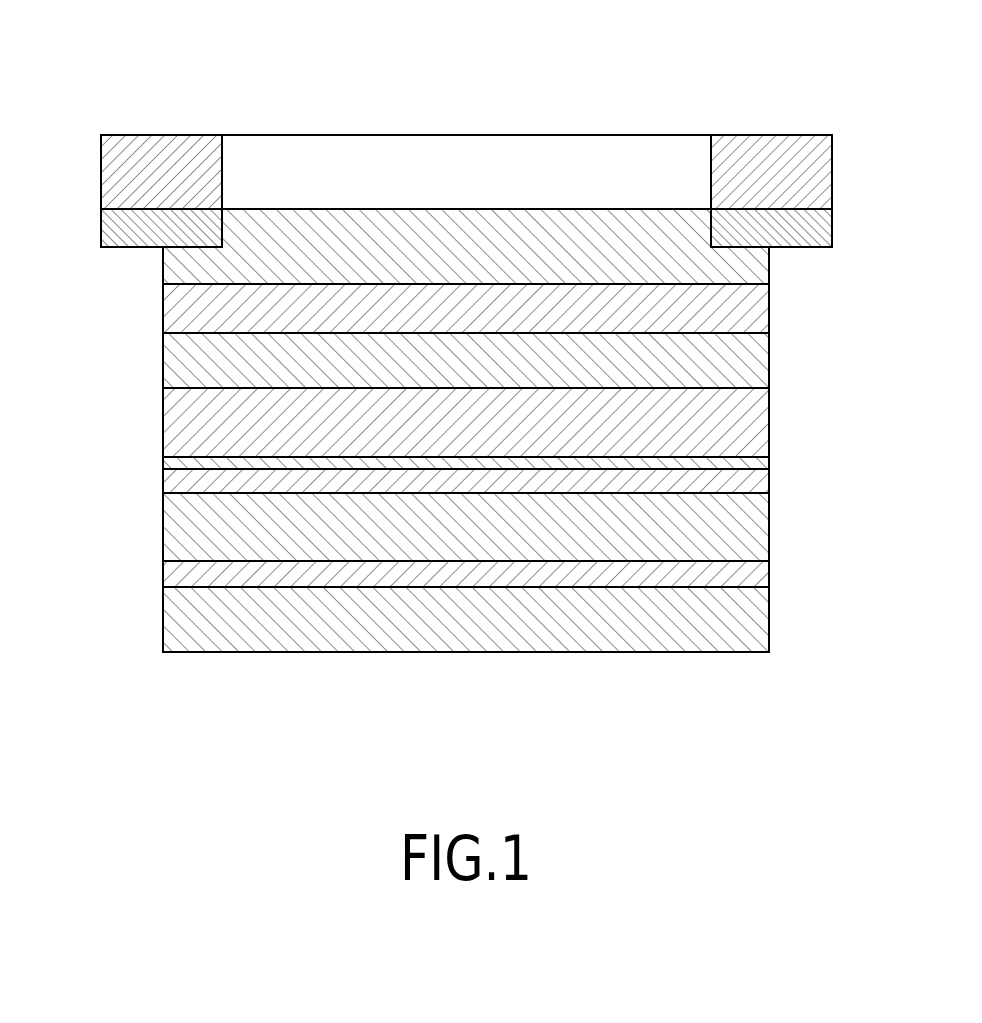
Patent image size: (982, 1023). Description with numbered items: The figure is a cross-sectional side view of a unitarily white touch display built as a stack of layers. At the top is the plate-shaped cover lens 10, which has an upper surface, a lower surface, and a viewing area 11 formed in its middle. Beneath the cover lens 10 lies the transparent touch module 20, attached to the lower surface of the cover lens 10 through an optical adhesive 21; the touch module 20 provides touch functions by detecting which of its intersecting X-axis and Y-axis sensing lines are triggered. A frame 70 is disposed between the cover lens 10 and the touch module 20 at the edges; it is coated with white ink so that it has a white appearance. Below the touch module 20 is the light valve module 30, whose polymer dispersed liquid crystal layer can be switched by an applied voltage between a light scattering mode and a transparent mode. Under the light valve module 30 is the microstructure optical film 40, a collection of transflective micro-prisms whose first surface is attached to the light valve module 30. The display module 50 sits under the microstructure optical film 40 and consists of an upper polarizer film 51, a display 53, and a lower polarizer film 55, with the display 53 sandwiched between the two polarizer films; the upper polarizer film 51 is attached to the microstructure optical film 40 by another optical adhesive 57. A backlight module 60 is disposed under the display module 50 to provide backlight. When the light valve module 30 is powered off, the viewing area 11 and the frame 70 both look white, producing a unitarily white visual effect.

The cover lens 10 is at (166, 98).
The viewing area 11 is at (483, 187).
The touch module 20 is at (180, 314).
The optical adhesive 21 is at (180, 269).
The light valve module 30 is at (750, 359).
The microstructure optical film 40 is at (750, 426).
The display module 50 is at (391, 527).
The upper polarizer film 51 is at (185, 482).
The display 53 is at (185, 529).
The lower polarizer film 55 is at (185, 575).
The optical adhesive 57 is at (750, 464).
The backlight module 60 is at (750, 622).
The frame 70 is at (118, 228).